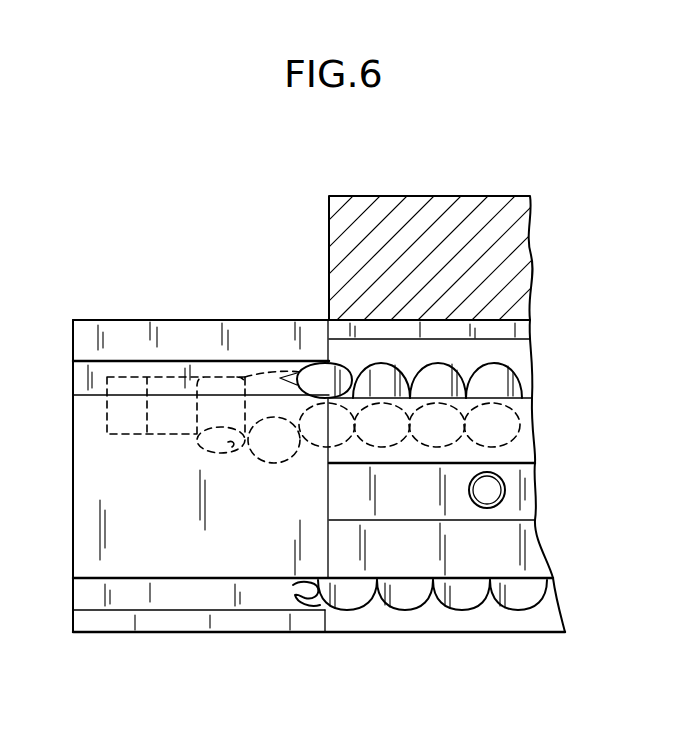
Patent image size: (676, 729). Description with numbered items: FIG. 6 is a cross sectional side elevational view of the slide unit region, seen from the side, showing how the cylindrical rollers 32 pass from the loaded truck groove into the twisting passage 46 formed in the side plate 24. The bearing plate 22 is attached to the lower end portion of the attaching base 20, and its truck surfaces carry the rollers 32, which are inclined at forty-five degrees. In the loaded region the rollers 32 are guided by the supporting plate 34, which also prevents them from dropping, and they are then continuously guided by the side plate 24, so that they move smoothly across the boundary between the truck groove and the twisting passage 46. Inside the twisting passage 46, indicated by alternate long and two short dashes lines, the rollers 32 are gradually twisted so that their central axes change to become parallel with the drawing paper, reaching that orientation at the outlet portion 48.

The attaching base 20 is at (418, 205).
The bearing plate 22 is at (512, 354).
The side plate 24 is at (134, 338).
The cylindrical rollers 32 is at (443, 365).
The supporting plate 34 is at (530, 546).
The twisting passage 46 is at (232, 447).
The outlet portion 48 is at (183, 435).